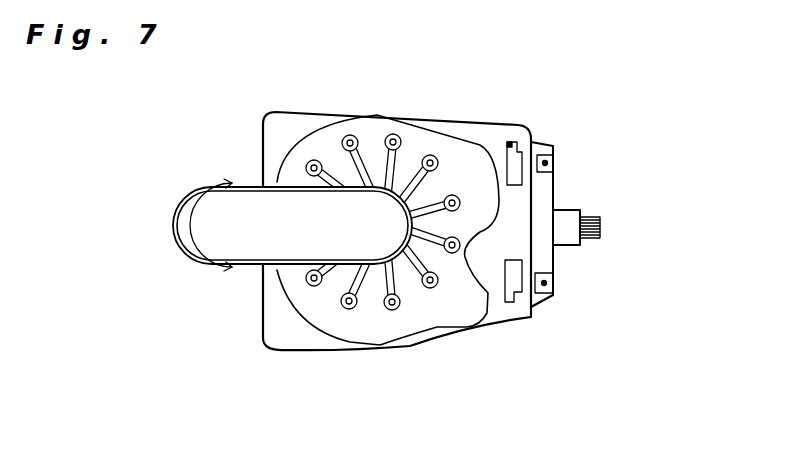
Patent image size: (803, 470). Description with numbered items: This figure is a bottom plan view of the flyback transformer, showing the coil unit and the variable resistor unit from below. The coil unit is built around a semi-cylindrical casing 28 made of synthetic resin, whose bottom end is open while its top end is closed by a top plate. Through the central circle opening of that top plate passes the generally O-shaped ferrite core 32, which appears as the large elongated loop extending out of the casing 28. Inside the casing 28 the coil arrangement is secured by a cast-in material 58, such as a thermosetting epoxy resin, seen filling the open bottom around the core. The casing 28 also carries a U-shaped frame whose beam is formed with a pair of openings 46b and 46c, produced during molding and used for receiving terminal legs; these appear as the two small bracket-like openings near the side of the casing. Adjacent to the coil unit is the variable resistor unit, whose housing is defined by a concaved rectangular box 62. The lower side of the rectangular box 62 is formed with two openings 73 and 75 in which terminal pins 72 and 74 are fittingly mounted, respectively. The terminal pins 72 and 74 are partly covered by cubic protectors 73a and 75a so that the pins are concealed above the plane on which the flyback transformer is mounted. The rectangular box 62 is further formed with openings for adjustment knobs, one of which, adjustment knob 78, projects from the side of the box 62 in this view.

The casing 28 is at (410, 348).
The ferrite core 32 is at (196, 217).
The cast-in material 58 is at (457, 153).
The rectangular box 62 is at (542, 306).
The terminal pin 72 is at (548, 164).
The opening 73 is at (548, 166).
The cubic protector 73a is at (557, 156).
The terminal pin 74 is at (553, 281).
The opening 75 is at (553, 285).
The cubic protector 75a is at (553, 288).
The adjustment knob 78 is at (603, 227).
The opening 46b is at (511, 142).
The opening 46c is at (508, 302).